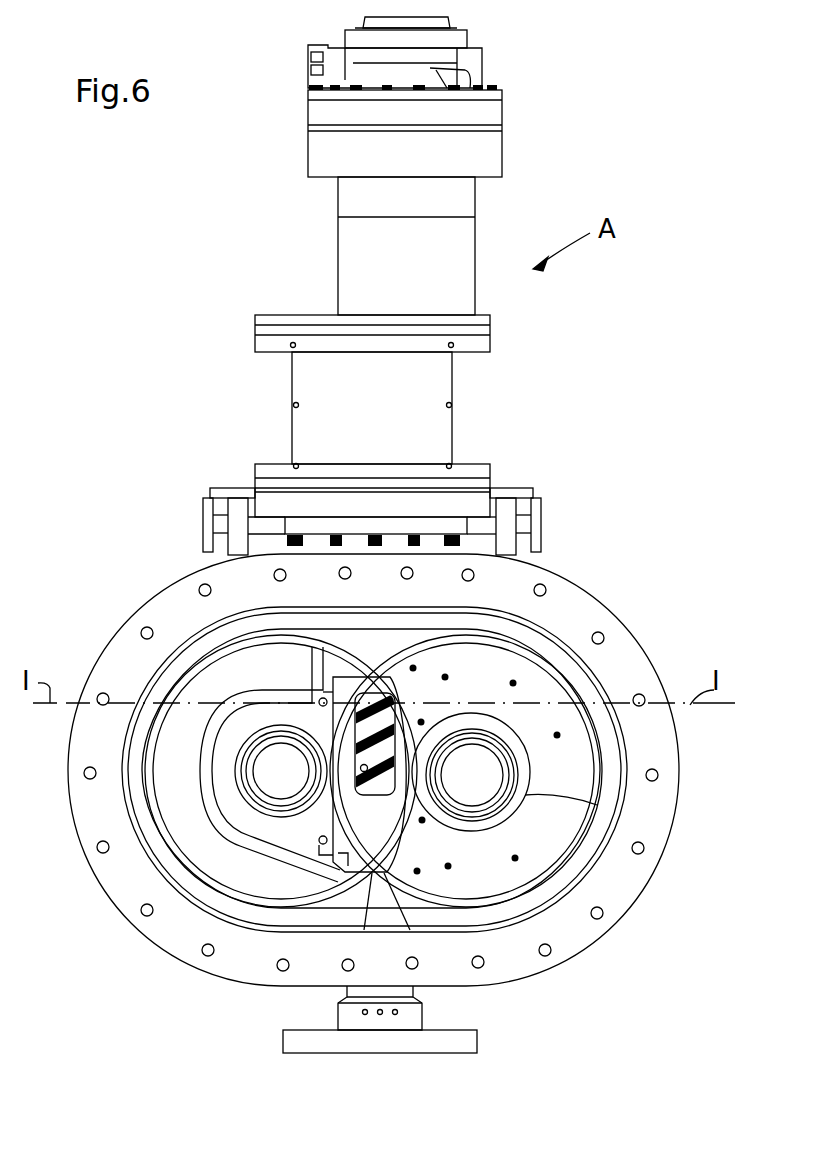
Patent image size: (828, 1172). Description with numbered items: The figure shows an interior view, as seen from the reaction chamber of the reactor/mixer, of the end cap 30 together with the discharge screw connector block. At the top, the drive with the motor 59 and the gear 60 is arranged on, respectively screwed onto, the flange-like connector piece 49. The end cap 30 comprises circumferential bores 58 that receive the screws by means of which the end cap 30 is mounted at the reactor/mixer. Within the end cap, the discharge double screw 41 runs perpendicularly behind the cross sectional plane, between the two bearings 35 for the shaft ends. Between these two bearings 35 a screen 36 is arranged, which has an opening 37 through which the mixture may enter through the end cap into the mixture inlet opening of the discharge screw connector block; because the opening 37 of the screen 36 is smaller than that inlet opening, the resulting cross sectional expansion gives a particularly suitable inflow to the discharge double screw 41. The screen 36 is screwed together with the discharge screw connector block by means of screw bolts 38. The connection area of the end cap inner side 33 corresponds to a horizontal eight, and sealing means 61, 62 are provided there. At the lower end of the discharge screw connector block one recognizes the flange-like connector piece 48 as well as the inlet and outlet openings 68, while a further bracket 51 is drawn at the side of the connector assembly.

The end cap 30 is at (151, 590).
The end cap inner side 33 is at (641, 647).
The bearings 35 is at (483, 778).
The screen 36 is at (333, 872).
The opening 37 is at (343, 857).
The screw bolts 38 is at (357, 767).
The discharge double screw 41 is at (377, 790).
The flange-like connector piece 48 is at (445, 1043).
The flange-like connector piece 49 is at (300, 523).
The bracket 51 is at (548, 507).
The circumferential bores 58 is at (642, 852).
The motor 59 is at (487, 161).
The gear 60 is at (440, 389).
The sealing means 61 is at (173, 853).
The sealing means 62 is at (207, 778).
The inlet and outlet openings 68 is at (381, 1014).